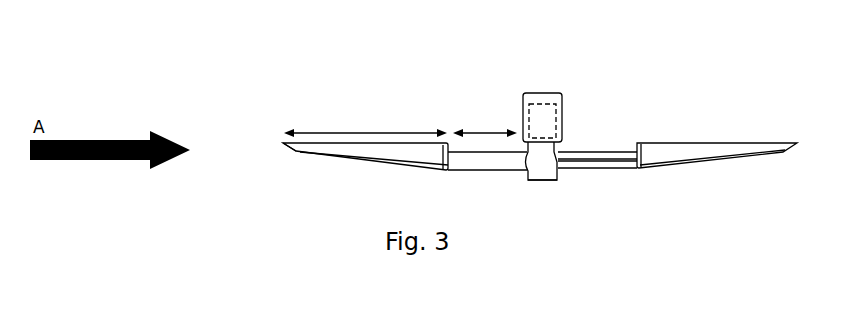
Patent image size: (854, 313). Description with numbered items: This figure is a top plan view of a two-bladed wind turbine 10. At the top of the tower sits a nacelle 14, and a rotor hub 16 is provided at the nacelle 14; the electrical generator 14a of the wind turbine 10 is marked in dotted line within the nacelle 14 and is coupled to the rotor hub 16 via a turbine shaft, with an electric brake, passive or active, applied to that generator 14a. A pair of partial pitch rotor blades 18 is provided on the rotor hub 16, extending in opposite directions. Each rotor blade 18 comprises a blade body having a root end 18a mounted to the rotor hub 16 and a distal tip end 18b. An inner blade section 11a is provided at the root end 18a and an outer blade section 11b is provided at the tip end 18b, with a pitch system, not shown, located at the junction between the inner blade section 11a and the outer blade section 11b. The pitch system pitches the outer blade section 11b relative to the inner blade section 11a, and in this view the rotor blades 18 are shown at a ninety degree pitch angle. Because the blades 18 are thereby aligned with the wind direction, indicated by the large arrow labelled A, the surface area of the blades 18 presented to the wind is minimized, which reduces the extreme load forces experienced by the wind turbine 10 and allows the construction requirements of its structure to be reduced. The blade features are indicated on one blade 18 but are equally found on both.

The wind turbine 10 is at (168, 57).
The inner blade section 11a is at (485, 117).
The outer blade section 11b is at (365, 117).
The nacelle 14 is at (545, 97).
The electrical generator 14a is at (559, 104).
The rotor hub 16 is at (543, 168).
The partial pitch rotor blade 18 is at (363, 150).
The root end 18a is at (525, 194).
The tip end 18b is at (266, 156).